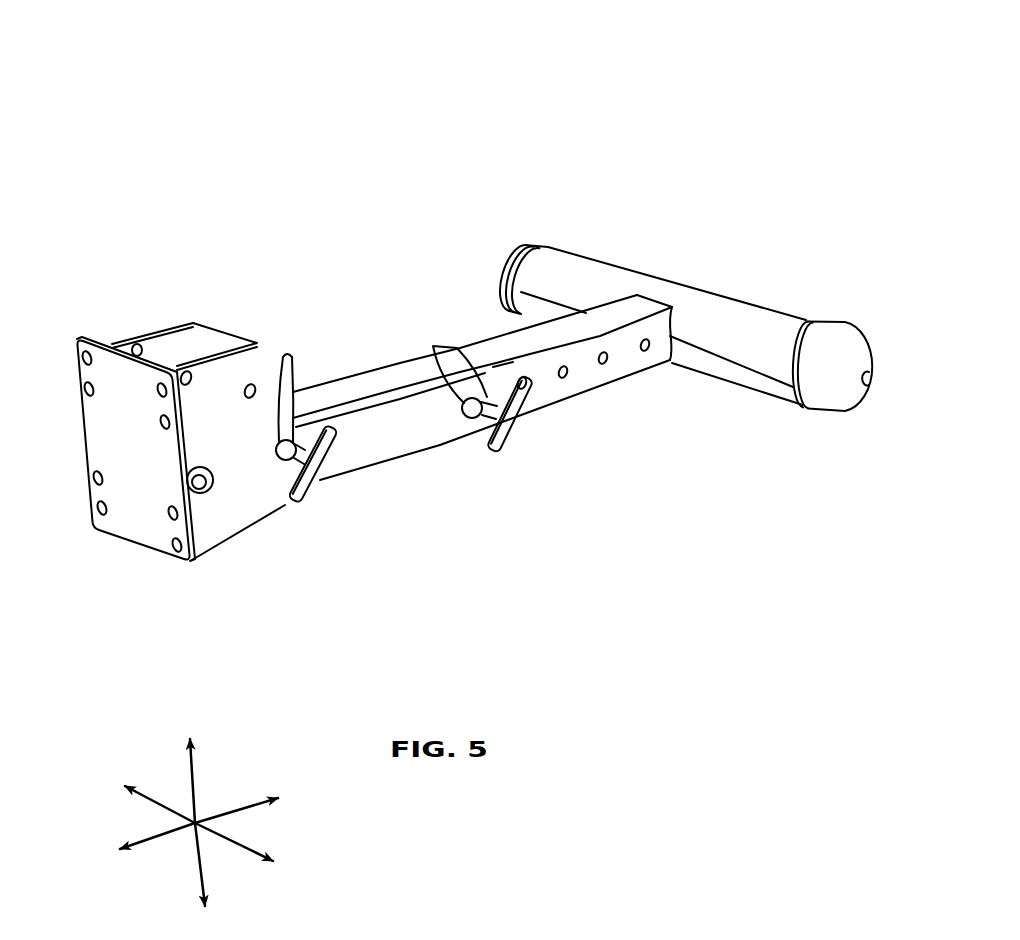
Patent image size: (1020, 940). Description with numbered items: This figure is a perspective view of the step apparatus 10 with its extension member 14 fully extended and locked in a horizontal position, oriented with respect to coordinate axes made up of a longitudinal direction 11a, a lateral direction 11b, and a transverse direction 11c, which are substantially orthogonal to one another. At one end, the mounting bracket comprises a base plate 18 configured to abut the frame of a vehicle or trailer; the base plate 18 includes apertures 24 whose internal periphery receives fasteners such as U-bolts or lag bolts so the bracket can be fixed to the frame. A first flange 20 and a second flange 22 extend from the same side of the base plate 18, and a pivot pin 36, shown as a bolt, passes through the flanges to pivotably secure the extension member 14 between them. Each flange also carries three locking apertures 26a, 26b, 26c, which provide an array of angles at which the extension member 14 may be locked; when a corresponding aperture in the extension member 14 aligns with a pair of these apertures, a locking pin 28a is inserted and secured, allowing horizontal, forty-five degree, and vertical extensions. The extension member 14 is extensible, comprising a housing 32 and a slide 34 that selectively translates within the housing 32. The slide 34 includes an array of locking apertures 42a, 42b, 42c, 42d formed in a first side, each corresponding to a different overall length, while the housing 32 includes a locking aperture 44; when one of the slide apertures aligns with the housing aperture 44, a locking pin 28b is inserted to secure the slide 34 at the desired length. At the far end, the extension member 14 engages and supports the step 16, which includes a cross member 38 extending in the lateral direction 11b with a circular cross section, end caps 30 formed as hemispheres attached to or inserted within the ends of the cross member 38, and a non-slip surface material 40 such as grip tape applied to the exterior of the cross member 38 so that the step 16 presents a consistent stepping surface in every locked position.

The apparatus 10 is at (560, 70).
The extension member 14 is at (496, 521).
The step 16 is at (744, 240).
The base plate 18 is at (146, 527).
The first flange 20 is at (256, 507).
The second flange 22 is at (198, 333).
The apertures 24 is at (81, 364).
The locking aperture 26a is at (138, 349).
The locking aperture 26b is at (251, 386).
The locking aperture 26c is at (291, 354).
The locking pin 28a is at (317, 468).
The locking pin 28b is at (500, 448).
The end caps 30 is at (502, 276).
The housing 32 is at (377, 380).
The slide 34 is at (497, 347).
The pivot pin 36 is at (208, 488).
The cross member 38 is at (538, 246).
The non-slip surface material 40 is at (638, 283).
The locking aperture 42a is at (523, 390).
The locking aperture 42b is at (563, 379).
The locking aperture 42c is at (604, 365).
The locking aperture 42d is at (645, 352).
The locking aperture 44 is at (450, 352).
The longitudinal direction 11a is at (258, 808).
The lateral direction 11b is at (254, 858).
The transverse direction 11c is at (198, 767).